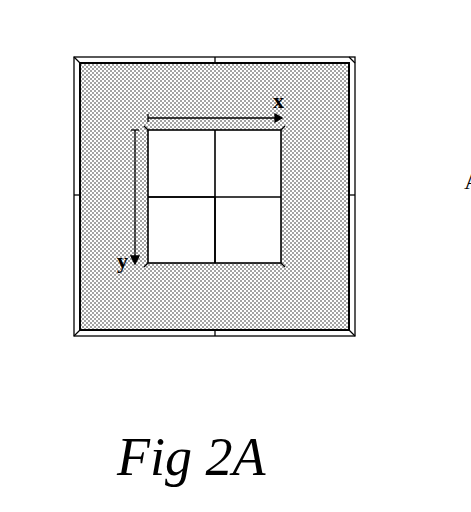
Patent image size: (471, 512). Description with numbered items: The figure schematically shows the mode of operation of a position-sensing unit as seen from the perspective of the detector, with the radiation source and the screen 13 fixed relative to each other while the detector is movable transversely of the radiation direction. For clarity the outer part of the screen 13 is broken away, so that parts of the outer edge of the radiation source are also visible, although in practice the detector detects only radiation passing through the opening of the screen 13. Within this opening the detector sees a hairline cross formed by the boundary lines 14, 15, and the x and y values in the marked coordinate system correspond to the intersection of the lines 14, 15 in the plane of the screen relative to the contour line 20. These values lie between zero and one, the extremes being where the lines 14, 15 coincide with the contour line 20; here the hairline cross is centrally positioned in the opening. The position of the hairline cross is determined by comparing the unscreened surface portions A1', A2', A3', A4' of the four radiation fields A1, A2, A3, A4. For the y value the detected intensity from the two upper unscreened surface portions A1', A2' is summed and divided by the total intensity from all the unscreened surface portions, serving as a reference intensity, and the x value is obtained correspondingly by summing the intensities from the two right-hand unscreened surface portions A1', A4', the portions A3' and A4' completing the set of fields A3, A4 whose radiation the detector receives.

The screen 13 is at (327, 262).
The boundary line 14 is at (147, 198).
The boundary line 15 is at (212, 253).
The contour line 20 is at (283, 184).
The radiation field A1 is at (339, 32).
The radiation field A2 is at (90, 32).
The radiation field A3 is at (67, 366).
The radiation field A4 is at (382, 329).
The unscreened surface portion A1' is at (338, 105).
The unscreened surface portion A2' is at (185, 82).
The unscreened surface portion A3' is at (154, 317).
The unscreened surface portion A4' is at (279, 322).